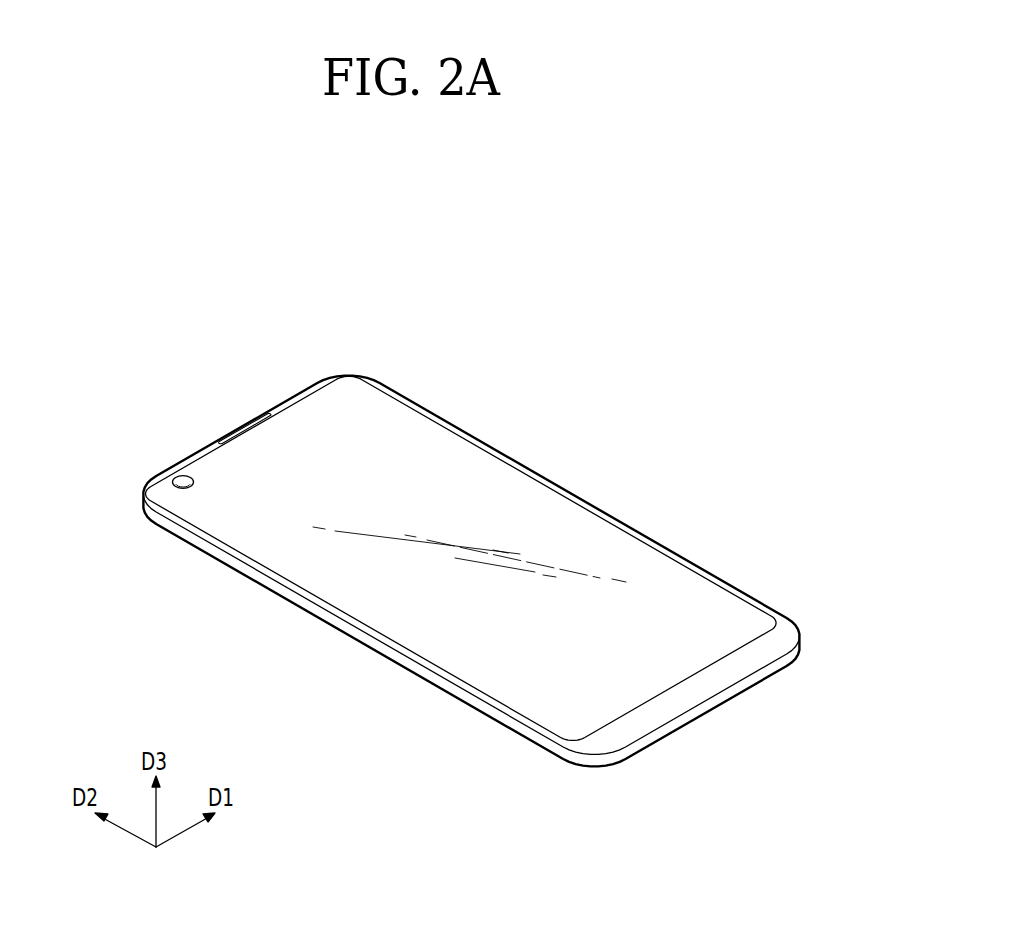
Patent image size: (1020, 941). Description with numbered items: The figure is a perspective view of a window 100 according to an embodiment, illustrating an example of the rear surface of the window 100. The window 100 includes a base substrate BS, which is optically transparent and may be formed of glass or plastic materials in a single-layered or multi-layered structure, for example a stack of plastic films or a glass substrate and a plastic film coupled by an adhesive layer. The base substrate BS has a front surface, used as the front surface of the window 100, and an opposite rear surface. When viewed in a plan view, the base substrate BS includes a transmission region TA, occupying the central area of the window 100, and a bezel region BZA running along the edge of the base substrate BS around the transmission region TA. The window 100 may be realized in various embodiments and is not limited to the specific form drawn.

The window 100 is at (673, 379).
The base substrate BS is at (139, 507).
The bezel region BZA is at (440, 423).
The transmission region TA is at (495, 472).